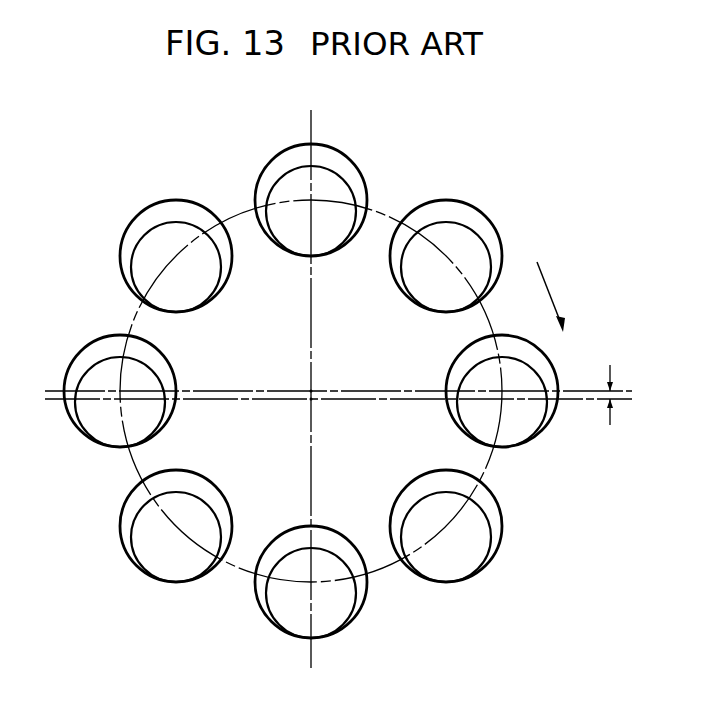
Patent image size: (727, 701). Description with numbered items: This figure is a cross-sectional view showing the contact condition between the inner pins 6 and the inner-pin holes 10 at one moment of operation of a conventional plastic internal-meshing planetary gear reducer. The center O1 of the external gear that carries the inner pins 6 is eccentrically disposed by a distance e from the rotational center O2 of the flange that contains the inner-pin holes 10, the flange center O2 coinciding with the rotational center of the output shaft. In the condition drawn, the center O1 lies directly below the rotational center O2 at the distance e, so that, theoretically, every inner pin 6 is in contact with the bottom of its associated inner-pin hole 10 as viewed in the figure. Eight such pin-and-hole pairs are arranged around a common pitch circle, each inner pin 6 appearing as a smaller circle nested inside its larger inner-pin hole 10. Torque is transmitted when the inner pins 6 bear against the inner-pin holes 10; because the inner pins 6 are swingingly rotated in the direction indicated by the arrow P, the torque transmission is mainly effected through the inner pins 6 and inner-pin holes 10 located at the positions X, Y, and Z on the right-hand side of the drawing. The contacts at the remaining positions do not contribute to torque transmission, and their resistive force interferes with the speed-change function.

The inner-pin hole 10 is at (275, 158).
The inner pin 6 is at (269, 194).
The position X is at (464, 208).
The position Y is at (545, 363).
The position Z is at (494, 510).
The arrow P is at (555, 297).
The center of the external gear O1 is at (311, 399).
The rotational center of the flange O2 is at (311, 391).
The eccentricity distance e is at (627, 395).